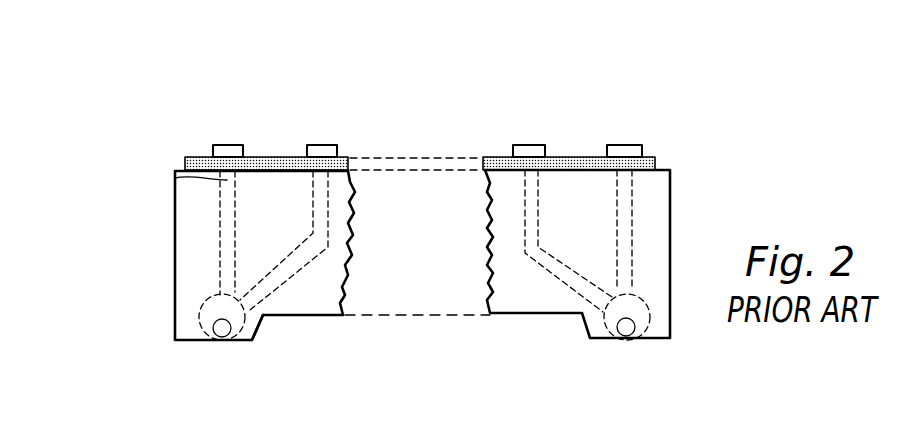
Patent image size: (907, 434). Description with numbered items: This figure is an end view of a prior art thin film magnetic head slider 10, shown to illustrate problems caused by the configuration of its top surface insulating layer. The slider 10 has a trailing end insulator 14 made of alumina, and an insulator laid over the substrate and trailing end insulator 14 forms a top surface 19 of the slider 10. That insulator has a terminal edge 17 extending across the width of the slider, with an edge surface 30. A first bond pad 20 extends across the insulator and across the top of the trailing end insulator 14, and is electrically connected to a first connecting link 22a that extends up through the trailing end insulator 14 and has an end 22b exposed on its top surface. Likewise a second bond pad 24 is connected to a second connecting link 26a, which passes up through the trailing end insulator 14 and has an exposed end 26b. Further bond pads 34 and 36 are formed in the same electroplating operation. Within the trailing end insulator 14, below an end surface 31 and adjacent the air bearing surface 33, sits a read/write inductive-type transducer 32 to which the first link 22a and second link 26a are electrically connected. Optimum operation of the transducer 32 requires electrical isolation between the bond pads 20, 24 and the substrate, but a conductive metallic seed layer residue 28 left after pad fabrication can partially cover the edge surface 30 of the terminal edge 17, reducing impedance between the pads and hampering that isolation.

The slider 10 is at (170, 108).
The trailing end insulator 14 is at (192, 235).
The terminal edge 17 is at (599, 159).
The top surface 19 is at (588, 152).
The first bond pad 20 is at (228, 145).
The first connecting link 22a is at (227, 208).
The end of first link 22b is at (175, 178).
The second bond pad 24 is at (308, 145).
The second connecting link 26a is at (323, 187).
The end of second link 26b is at (320, 163).
The conductive metallic seed layer residue 28 is at (495, 163).
The edge surface 30 is at (485, 163).
The end surface 31 is at (540, 304).
The read/write inductive-type transducer 32 is at (215, 303).
The air bearing surface 33 is at (242, 341).
The bond pad 34 is at (542, 150).
The bond pad 36 is at (630, 144).